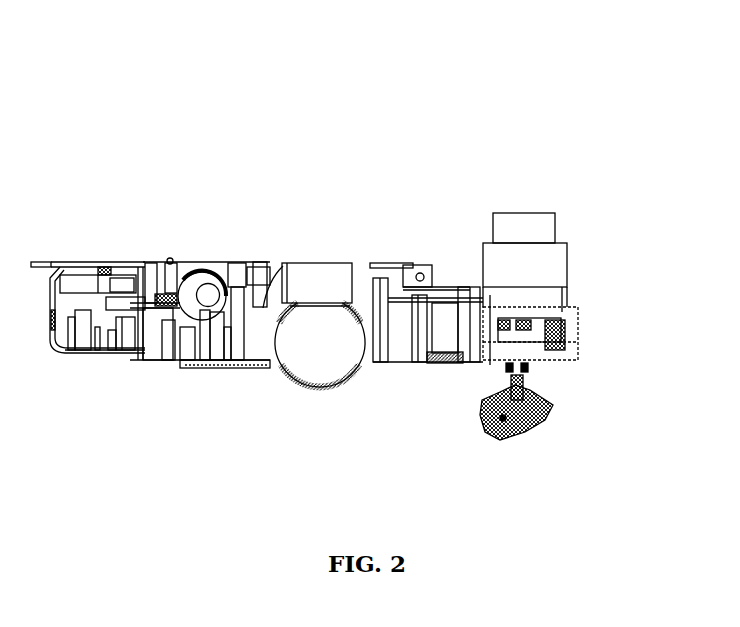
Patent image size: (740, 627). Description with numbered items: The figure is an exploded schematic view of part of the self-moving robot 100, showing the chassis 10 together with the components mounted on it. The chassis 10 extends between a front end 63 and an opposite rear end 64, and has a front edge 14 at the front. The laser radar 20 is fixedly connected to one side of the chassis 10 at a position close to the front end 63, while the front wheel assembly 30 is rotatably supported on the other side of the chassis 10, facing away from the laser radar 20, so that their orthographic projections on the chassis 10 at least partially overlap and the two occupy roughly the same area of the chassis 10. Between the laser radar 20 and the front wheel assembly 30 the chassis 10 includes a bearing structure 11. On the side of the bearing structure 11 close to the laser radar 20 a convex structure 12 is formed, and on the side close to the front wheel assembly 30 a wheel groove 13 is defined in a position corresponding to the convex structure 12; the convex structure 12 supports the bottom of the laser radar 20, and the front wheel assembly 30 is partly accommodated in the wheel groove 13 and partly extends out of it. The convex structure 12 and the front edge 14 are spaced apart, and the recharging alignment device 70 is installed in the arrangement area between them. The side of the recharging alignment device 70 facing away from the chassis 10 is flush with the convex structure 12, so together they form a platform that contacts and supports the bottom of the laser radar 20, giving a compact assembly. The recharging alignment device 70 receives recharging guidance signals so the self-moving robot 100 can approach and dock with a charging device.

The self-moving robot 100 is at (323, 137).
The chassis 10 is at (167, 432).
The bearing structure 11 is at (630, 403).
The convex structure 12 is at (497, 312).
The wheel groove 13 is at (428, 420).
The front edge 14 is at (613, 337).
The laser radar 20 is at (523, 220).
The front wheel assembly 30 is at (487, 480).
The front end 63 is at (607, 467).
The rear end 64 is at (50, 395).
The recharging alignment device 70 is at (557, 316).